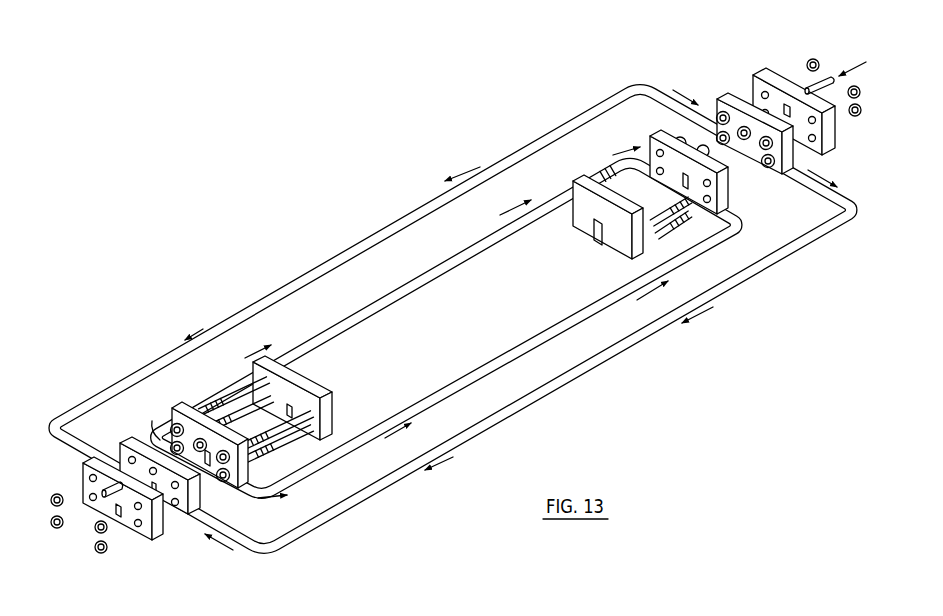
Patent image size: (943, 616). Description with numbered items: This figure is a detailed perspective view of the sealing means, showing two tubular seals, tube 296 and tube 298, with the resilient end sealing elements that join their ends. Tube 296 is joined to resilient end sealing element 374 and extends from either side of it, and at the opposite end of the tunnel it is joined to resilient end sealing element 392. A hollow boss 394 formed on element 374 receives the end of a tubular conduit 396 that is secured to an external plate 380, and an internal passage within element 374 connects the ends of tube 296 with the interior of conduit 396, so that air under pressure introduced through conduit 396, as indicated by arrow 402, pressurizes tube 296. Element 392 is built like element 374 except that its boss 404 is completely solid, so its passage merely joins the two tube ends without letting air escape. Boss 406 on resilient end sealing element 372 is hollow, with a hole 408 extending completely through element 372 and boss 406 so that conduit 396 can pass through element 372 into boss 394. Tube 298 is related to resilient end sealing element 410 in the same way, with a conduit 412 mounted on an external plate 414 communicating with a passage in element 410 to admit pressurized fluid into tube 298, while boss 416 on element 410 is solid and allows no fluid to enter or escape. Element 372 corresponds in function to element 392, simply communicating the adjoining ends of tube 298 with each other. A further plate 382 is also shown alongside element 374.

The tube 296 is at (547, 332).
The tube 298 is at (398, 227).
The resilient end sealing element 372 is at (120, 445).
The resilient end sealing element 374 is at (195, 414).
The external plate 380 is at (157, 540).
The clamp block 382 is at (298, 382).
The resilient end sealing element 392 is at (660, 137).
The hollow boss 394 is at (203, 452).
The tubular conduit 396 is at (103, 493).
The arrow 402 is at (93, 507).
The boss 404 is at (703, 146).
The boss 406 is at (157, 433).
The hole 408 is at (155, 475).
The resilient end sealing element 410 is at (730, 100).
The conduit 412 is at (808, 86).
The external plate 414 is at (826, 138).
The boss 416 is at (747, 140).